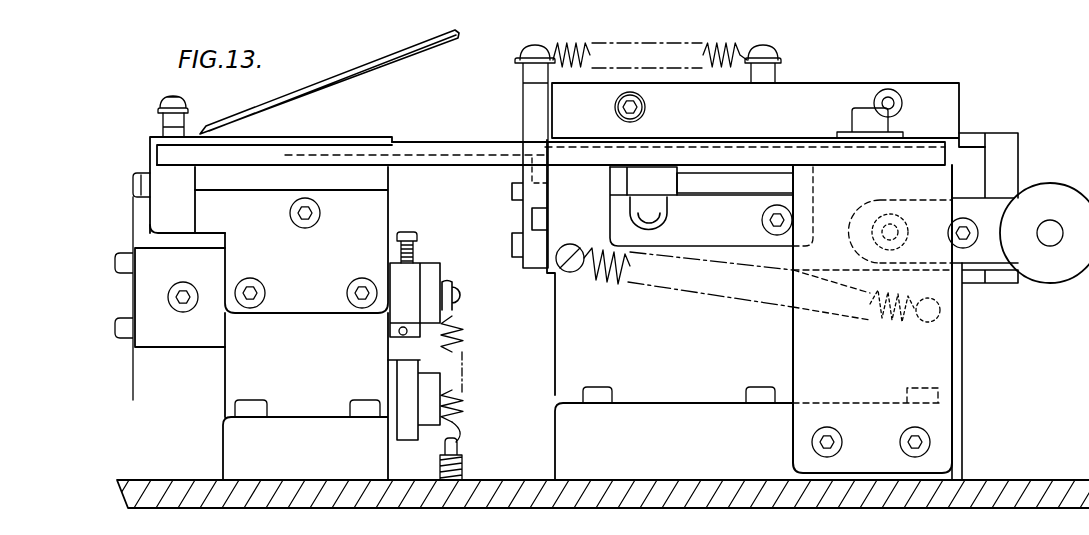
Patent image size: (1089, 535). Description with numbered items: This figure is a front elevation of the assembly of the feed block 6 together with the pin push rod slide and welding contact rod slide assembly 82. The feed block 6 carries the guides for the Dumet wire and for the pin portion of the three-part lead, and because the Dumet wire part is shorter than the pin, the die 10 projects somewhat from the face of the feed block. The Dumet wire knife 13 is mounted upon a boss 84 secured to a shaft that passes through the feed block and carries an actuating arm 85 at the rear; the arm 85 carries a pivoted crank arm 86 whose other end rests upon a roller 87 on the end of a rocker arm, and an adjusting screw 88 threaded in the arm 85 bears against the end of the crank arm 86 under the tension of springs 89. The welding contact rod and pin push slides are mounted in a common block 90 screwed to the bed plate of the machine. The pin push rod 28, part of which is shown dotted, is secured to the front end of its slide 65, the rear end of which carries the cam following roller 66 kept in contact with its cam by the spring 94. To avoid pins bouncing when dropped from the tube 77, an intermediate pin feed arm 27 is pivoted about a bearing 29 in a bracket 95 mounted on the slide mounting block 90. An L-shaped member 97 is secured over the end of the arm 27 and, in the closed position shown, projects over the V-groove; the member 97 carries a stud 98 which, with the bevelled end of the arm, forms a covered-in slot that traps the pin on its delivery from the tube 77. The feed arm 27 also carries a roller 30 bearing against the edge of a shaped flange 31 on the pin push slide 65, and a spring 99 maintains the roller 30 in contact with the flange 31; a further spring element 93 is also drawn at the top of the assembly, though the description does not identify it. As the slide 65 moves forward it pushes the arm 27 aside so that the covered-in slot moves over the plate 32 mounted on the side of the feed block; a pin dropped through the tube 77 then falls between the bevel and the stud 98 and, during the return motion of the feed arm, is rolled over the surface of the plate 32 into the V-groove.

The feed block 6 is at (305, 396).
The die 10 is at (148, 186).
The Dumet wire knife 13 is at (135, 226).
The pin feed arm 27 is at (458, 142).
The pin push rod 28 is at (543, 197).
The bearing 29 is at (880, 127).
The roller 30 is at (650, 166).
The shaped flange 31 is at (700, 172).
The plate 32 is at (372, 178).
The pin push rod slide 65 is at (975, 178).
The cam following roller 66 is at (1056, 272).
The tube 77 is at (285, 100).
The pin push rod slide and welding contact rod slide assembly 82 is at (972, 325).
The boss 84 is at (180, 297).
The actuating arm 85 is at (400, 285).
The crank arm 86 is at (440, 348).
The roller 87 is at (462, 423).
The adjusting screw 88 is at (416, 250).
The springs 89 is at (465, 375).
The common block 90 is at (670, 310).
The spring 93 is at (722, 68).
The spring 94 is at (708, 290).
The bracket 95 is at (920, 380).
The L-shaped member 97 is at (160, 137).
The stud 98 is at (271, 185).
The spring 99 is at (157, 100).